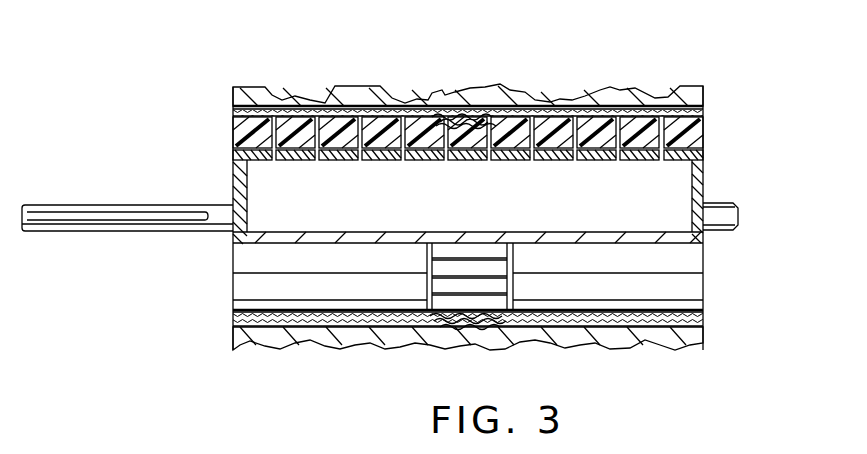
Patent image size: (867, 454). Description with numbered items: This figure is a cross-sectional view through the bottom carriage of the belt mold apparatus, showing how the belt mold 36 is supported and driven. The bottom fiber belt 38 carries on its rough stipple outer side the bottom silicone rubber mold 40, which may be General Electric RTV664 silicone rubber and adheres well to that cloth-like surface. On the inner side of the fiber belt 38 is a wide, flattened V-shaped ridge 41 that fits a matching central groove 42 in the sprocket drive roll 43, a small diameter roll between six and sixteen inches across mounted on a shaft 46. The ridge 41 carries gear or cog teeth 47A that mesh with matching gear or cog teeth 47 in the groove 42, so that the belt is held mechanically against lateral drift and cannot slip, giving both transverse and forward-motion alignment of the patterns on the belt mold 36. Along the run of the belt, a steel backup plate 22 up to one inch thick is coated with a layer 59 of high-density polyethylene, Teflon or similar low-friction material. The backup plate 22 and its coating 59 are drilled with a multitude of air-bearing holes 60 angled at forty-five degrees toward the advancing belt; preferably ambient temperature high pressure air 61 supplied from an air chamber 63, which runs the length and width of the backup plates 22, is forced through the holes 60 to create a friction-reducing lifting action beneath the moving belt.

The belt mold 36 is at (469, 187).
The bottom fiber belt 38 is at (381, 105).
The bottom silicone rubber mold 40 is at (604, 86).
The flattened V-shaped ridge 41 is at (476, 112).
The groove 42 is at (500, 286).
The sprocket drive roll 43 is at (687, 290).
The shaft 46 is at (165, 226).
The gear or cog teeth 47 is at (433, 266).
The gear or cog teeth on ridge 47A is at (468, 328).
The backup plate coating 59 is at (682, 133).
The air-bearing holes 60 is at (273, 161).
The high pressure air 61 is at (491, 168).
The backup plate 22 is at (608, 161).
The air chamber 63 is at (257, 188).